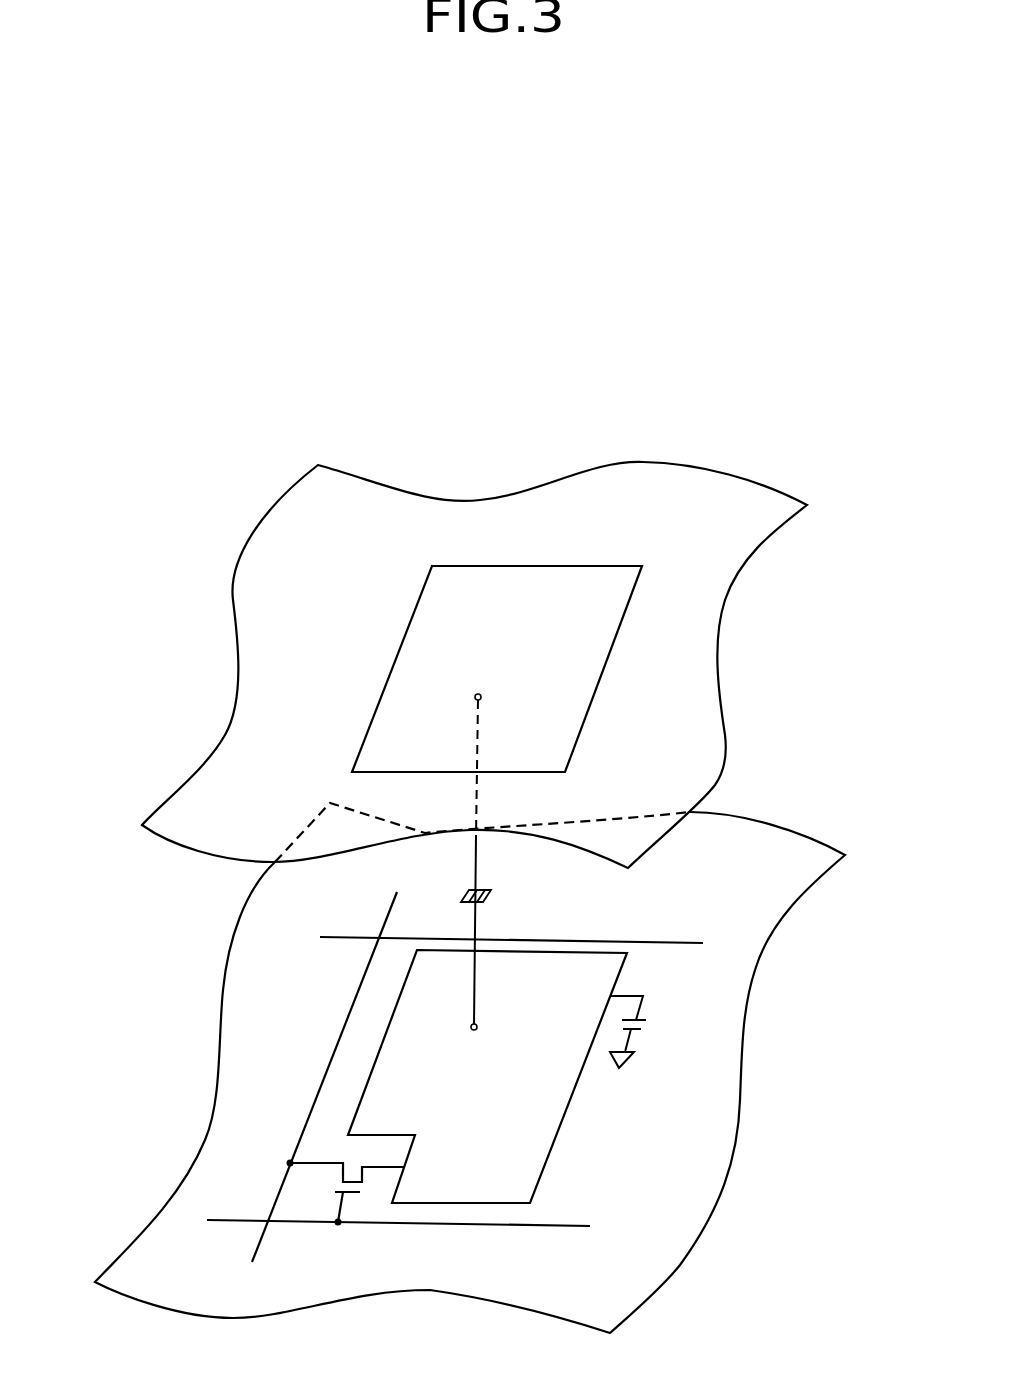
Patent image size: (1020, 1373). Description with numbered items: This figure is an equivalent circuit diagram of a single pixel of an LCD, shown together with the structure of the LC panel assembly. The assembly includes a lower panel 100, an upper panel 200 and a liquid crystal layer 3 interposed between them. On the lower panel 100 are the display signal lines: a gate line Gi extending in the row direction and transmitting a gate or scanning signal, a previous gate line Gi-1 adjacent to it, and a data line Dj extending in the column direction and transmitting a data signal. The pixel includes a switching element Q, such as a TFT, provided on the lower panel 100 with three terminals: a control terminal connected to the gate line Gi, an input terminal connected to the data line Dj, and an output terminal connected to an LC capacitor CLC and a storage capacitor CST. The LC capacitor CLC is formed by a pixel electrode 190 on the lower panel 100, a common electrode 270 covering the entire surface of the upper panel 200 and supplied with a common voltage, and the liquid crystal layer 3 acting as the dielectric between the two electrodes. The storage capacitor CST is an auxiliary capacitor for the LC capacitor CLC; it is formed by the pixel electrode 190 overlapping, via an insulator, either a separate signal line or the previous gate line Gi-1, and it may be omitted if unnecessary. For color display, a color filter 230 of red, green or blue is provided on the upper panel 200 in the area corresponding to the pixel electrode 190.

The liquid crystal layer 3 is at (304, 862).
The lower panel 100 is at (748, 1048).
The pixel electrode 190 is at (558, 1135).
The upper panel 200 is at (498, 665).
The color filter 230 is at (600, 687).
The common electrode 270 is at (725, 700).
The data line Dj is at (324, 1075).
The previous gate line Gi-1 is at (495, 957).
The gate line Gi is at (397, 1202).
The switching element Q is at (346, 1193).
The LC capacitor CLC is at (509, 898).
The storage capacitor CST is at (653, 1032).